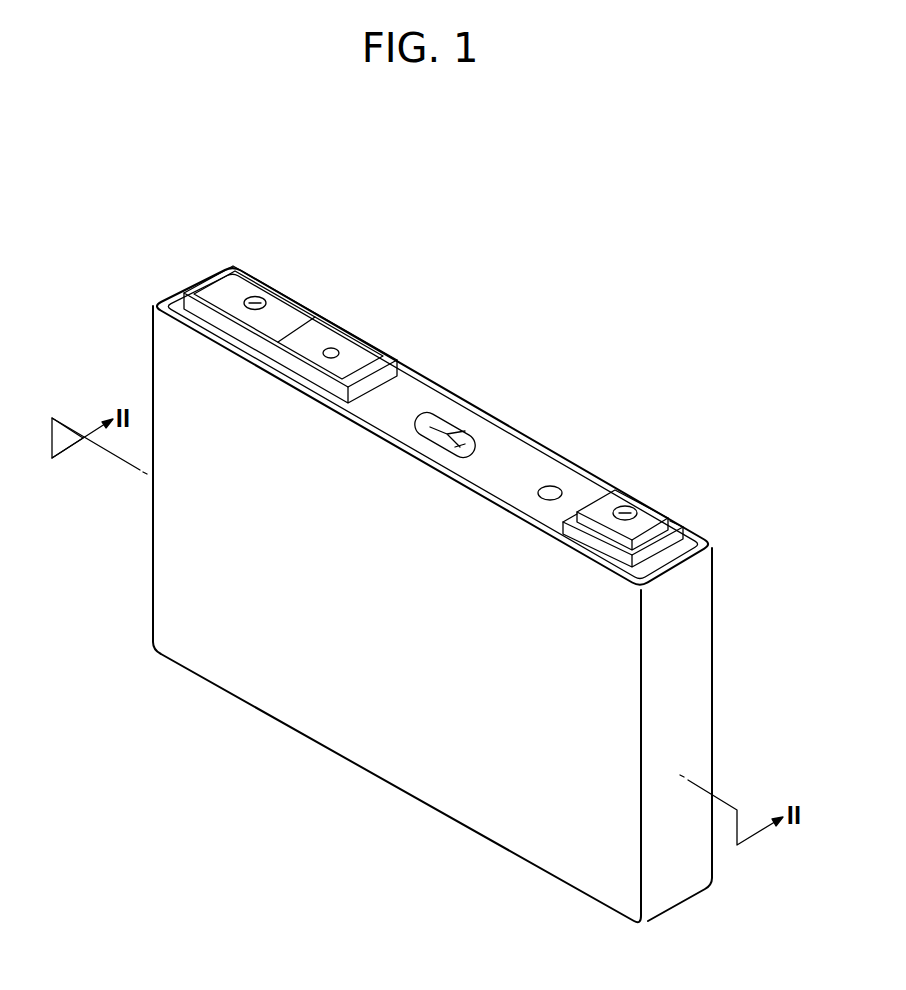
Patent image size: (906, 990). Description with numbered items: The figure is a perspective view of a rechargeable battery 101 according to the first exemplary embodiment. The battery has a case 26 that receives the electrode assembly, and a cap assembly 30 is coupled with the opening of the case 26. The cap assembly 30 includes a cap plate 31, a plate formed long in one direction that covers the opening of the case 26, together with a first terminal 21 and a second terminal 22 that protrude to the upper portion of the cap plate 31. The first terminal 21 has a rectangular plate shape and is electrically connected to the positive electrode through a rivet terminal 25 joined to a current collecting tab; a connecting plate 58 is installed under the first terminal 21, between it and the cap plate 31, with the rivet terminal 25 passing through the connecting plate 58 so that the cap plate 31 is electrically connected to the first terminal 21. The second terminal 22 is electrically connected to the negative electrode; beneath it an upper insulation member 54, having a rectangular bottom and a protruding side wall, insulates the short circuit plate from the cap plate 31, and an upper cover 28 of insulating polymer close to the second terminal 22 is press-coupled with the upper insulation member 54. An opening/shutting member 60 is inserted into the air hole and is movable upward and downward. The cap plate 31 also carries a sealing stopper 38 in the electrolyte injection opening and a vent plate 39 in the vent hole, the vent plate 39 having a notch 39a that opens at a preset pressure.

The rechargeable battery 101 is at (452, 229).
The first terminal 21 is at (650, 517).
The second terminal 22 is at (291, 318).
The rivet terminal 25 is at (258, 298).
The case 26 is at (379, 745).
The upper cover 28 is at (325, 338).
The cap assembly 30 is at (524, 434).
The cap plate 31 is at (405, 396).
The sealing stopper 38 is at (553, 489).
The vent plate 39 is at (442, 420).
The notch 39a is at (458, 443).
The upper insulation member 54 is at (383, 348).
The connecting plate 58 is at (683, 541).
The opening/shutting member 60 is at (340, 352).